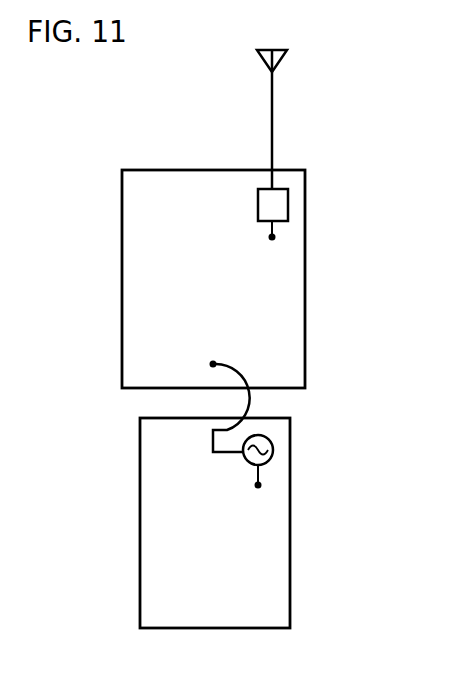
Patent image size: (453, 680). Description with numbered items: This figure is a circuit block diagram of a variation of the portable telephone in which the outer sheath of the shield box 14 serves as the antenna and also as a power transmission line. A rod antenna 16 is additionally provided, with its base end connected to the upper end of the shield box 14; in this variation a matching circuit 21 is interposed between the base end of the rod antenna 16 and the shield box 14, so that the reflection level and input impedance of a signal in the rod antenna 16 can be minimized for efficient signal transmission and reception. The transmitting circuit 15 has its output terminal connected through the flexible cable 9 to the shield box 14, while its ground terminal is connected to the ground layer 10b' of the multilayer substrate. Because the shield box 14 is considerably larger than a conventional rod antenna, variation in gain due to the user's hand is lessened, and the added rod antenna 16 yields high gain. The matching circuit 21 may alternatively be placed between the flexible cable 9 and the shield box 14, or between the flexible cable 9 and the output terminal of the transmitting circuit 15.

The rod antenna 16 is at (272, 125).
The shield box 14 is at (305, 284).
The matching circuit 21 is at (278, 202).
The flexible cable 9 is at (249, 399).
The transmitting circuit 15 is at (273, 450).
The ground layer 10b' is at (259, 523).